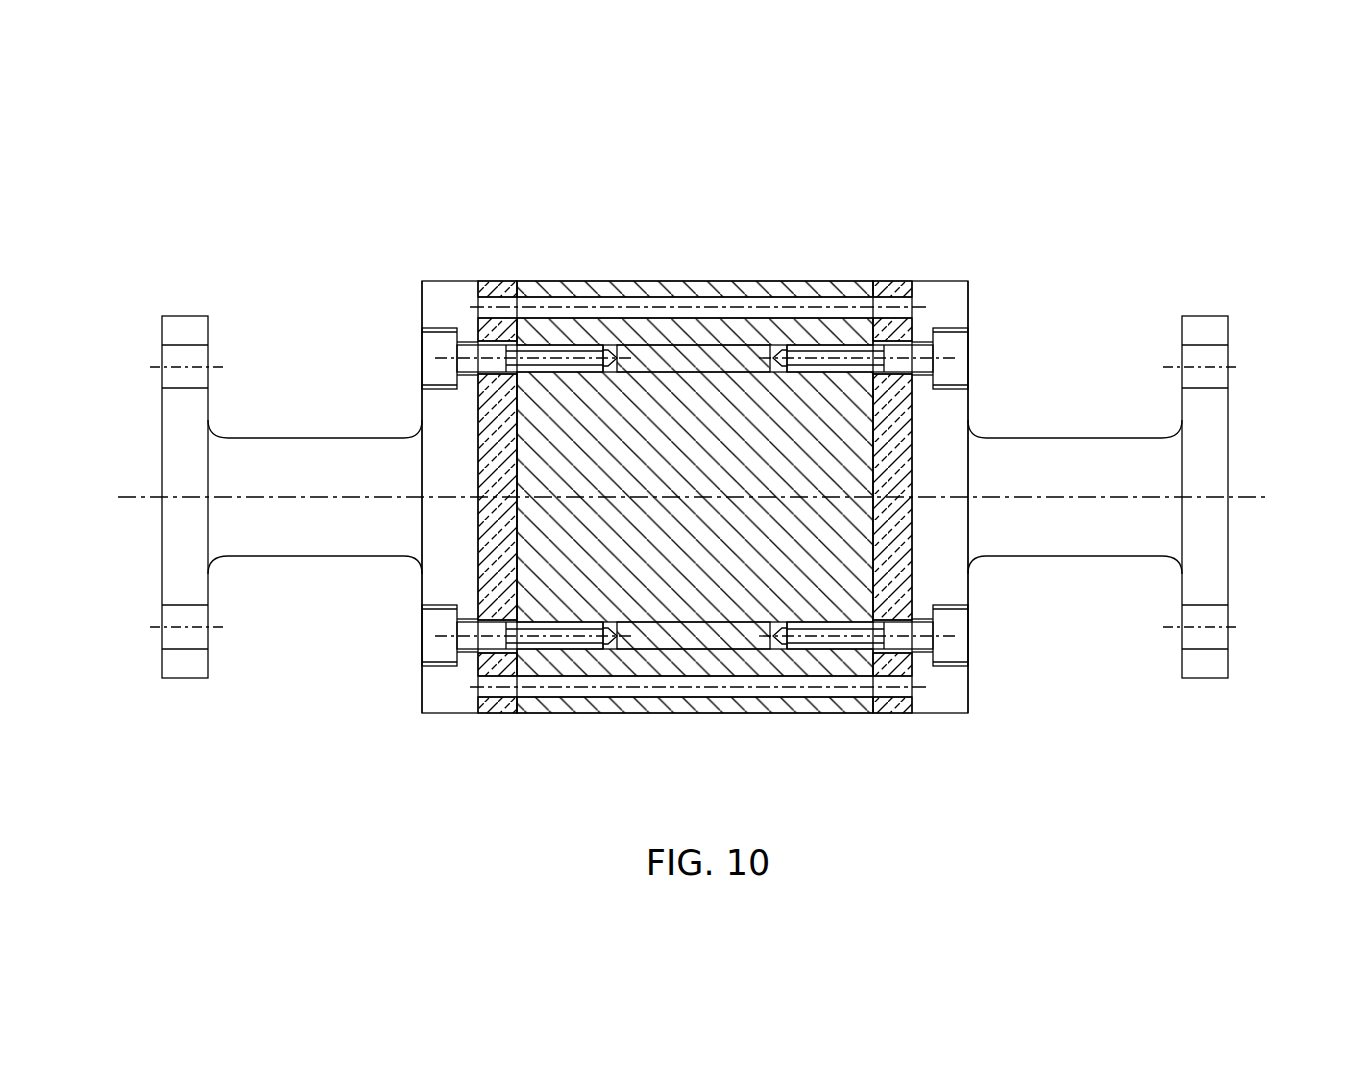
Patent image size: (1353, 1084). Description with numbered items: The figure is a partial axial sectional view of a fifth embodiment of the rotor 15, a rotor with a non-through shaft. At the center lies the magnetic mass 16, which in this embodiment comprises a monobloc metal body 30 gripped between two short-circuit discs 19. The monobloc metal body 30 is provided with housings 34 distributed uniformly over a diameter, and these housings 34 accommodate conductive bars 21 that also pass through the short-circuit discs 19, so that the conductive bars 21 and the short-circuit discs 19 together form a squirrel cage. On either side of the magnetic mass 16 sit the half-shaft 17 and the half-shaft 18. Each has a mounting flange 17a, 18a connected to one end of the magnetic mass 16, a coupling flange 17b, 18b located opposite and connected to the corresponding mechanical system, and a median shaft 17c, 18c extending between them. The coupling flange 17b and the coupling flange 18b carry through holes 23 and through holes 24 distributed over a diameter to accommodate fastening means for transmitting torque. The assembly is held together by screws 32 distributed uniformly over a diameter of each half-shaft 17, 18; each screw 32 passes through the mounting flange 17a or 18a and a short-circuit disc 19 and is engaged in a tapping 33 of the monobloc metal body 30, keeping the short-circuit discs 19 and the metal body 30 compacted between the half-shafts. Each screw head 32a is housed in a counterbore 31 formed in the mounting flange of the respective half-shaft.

The rotor 15 is at (702, 460).
The magnetic mass 16 is at (712, 278).
The half-shaft 17 is at (262, 488).
The mounting flange 17a is at (422, 290).
The coupling flange 17b is at (165, 471).
The median shaft 17c is at (300, 556).
The half-shaft 18 is at (1134, 493).
The mounting flange 18a is at (968, 290).
The coupling flange 18b is at (1232, 497).
The median shaft 18c is at (1080, 556).
The short-circuit disc 19 is at (500, 278).
The conductive bar 21 is at (632, 302).
The through hole 23 is at (160, 368).
The through hole 24 is at (1214, 355).
The monobloc metal body 30 is at (694, 498).
The counterbore 31 is at (440, 322).
The screw 32 is at (694, 499).
The screw head 32a is at (440, 366).
The tapping 33 is at (556, 330).
The housing 34 is at (700, 498).